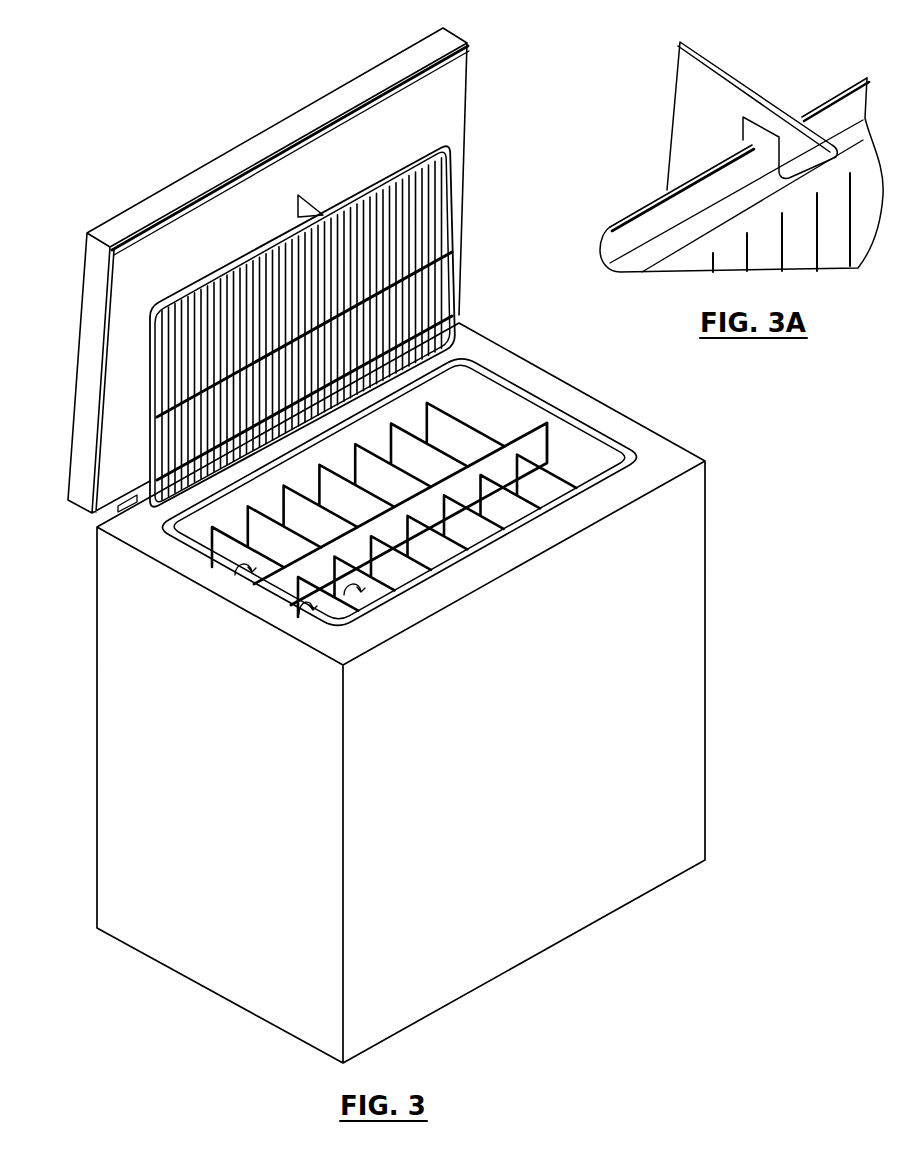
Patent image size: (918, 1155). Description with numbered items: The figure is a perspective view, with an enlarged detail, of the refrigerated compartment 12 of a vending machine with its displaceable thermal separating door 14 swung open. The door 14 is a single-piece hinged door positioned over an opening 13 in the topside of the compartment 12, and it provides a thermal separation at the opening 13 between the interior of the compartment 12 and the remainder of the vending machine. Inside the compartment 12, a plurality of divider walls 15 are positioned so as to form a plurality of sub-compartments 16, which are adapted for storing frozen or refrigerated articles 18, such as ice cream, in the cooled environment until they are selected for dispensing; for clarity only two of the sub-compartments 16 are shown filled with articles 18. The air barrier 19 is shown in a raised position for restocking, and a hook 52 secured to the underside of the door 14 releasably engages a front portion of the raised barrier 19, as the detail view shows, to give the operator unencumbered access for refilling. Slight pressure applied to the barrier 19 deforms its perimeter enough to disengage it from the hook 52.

In FIG. 3, the refrigerated compartment 12 is at (97, 605).
In FIG. 3, the opening 13 is at (609, 441).
In FIG. 3, the thermal separating door 14 is at (112, 217).
In FIG. 3, the divider walls 15 is at (556, 470).
In FIG. 3, the sub-compartments 16 is at (352, 598).
In FIG. 3, the articles 18 is at (577, 500).
In FIG. 3, the air barrier 19 is at (457, 243).
In FIG. 3A, the air barrier 19 is at (637, 207).
In FIG. 3, the hook 52 is at (310, 207).
In FIG. 3A, the hook 52 is at (750, 82).